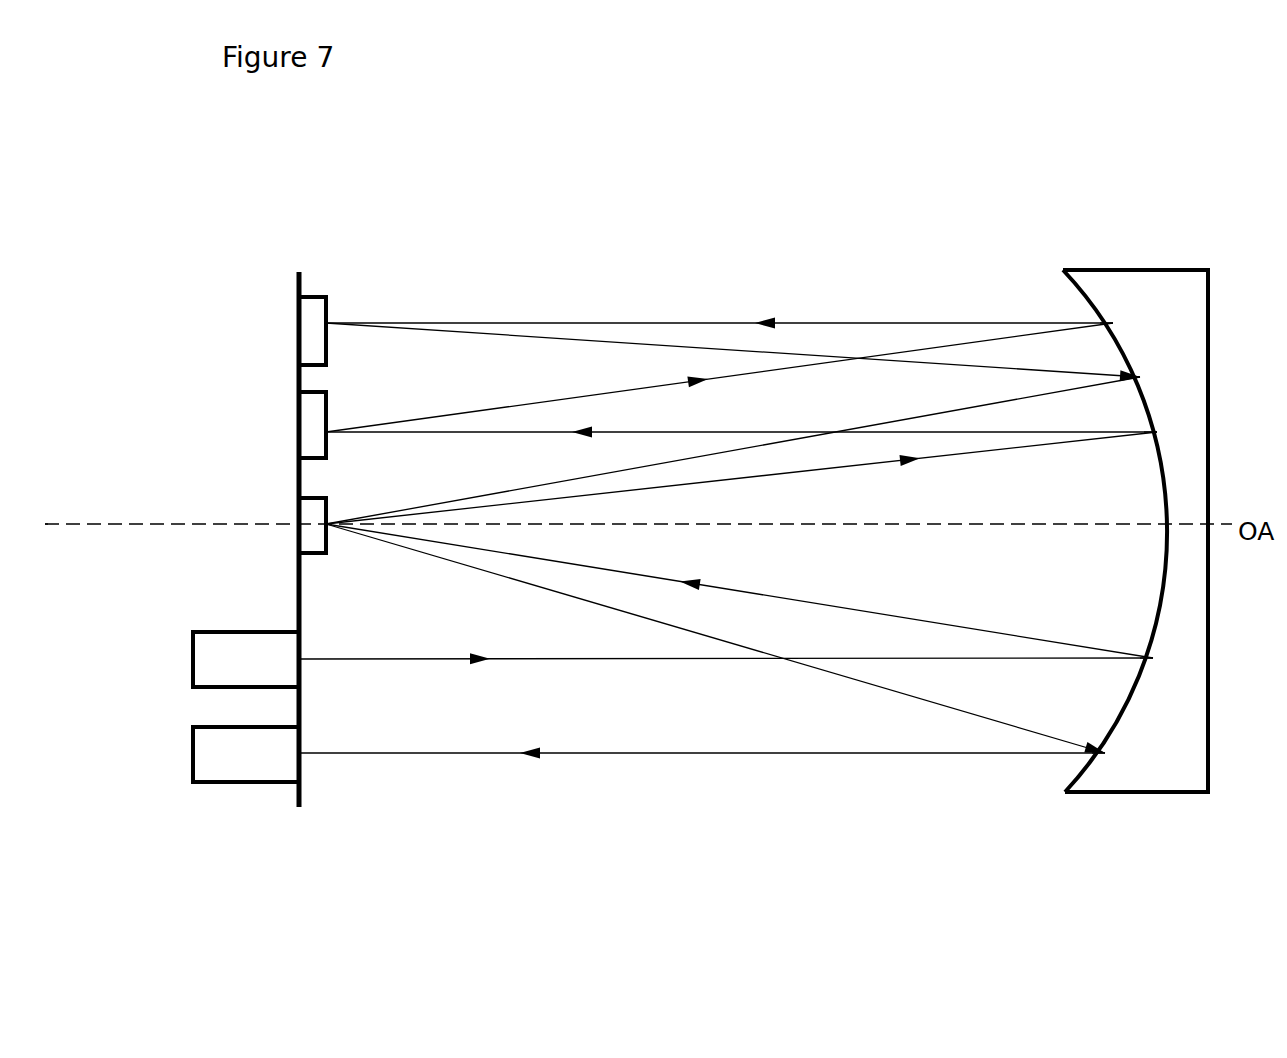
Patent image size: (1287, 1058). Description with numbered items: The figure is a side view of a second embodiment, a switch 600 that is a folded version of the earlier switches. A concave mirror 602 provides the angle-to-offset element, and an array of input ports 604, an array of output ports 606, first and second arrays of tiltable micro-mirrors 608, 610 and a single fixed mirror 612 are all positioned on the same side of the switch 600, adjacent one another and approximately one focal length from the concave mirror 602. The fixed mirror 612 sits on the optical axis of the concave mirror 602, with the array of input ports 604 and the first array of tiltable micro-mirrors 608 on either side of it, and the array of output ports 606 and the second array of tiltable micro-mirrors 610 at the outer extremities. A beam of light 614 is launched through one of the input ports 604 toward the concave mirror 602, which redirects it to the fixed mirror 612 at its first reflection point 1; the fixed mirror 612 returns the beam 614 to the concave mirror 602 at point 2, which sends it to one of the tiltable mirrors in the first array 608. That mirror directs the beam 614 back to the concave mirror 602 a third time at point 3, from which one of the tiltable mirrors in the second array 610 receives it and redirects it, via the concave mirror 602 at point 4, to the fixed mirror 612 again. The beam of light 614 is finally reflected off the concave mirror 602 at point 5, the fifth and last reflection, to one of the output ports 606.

The switch 600 is at (705, 236).
The concave mirror 602 is at (1125, 269).
The array of input ports 604 is at (192, 661).
The array of output ports 606 is at (268, 782).
The first array of tiltable micro-mirrors 608 is at (298, 424).
The second array of tiltable micro-mirrors 610 is at (326, 292).
The fixed mirror 612 is at (298, 538).
The beam of light 614 is at (565, 658).
The mirror reflection point 1 is at (1162, 661).
The mirror reflection point 2 is at (1169, 431).
The mirror reflection point 3 is at (1120, 311).
The mirror reflection point 4 is at (1148, 364).
The mirror reflection point 5 is at (1124, 764).